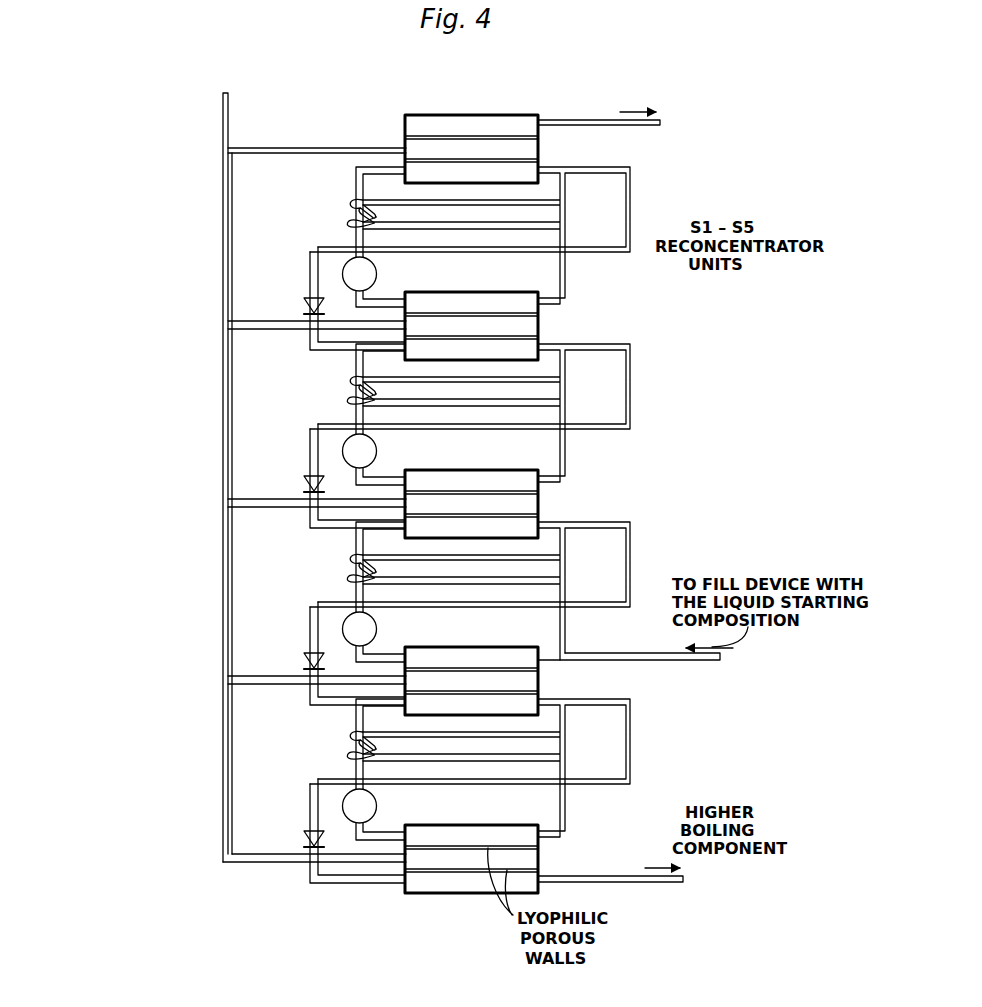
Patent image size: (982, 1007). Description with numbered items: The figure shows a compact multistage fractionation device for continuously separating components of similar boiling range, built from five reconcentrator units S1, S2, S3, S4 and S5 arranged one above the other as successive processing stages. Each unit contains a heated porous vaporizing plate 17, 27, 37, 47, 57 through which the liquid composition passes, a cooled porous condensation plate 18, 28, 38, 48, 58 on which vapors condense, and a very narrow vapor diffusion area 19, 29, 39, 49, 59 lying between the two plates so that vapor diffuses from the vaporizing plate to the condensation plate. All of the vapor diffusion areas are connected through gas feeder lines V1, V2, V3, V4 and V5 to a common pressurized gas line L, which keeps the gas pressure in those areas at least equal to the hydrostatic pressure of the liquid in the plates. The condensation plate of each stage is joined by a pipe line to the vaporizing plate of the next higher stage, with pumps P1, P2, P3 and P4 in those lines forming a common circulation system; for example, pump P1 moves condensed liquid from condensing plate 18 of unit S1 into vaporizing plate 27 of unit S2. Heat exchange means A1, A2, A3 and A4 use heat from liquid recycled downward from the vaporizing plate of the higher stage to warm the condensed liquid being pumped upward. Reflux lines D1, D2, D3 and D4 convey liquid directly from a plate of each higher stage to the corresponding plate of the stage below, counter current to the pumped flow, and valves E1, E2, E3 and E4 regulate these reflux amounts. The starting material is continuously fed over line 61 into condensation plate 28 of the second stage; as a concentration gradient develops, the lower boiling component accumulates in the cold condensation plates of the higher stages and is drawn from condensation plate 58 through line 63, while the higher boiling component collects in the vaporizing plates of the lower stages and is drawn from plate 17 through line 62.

The common pressurized gas line L is at (232, 474).
The gas feeder line V1 is at (262, 853).
The gas feeder line V2 is at (254, 674).
The gas feeder line V3 is at (257, 497).
The gas feeder line V4 is at (250, 318).
The gas feeder line V5 is at (296, 143).
The heat exchange means A1 is at (348, 745).
The heat exchange means A2 is at (349, 567).
The heat exchange means A3 is at (348, 388).
The heat exchange means A4 is at (347, 212).
The pumping means P1 is at (377, 808).
The pumping means P2 is at (377, 627).
The pumping means P3 is at (377, 450).
The pumping means P4 is at (377, 272).
The valve means E1 is at (326, 838).
The valve means E2 is at (326, 660).
The valve means E3 is at (326, 483).
The valve means E4 is at (326, 305).
The reconcentrator unit S1 is at (455, 895).
The reconcentrator unit S2 is at (457, 647).
The reconcentrator unit S3 is at (452, 469).
The reconcentrator unit S4 is at (455, 291).
The reconcentrator unit S5 is at (530, 114).
The reflux line D1 is at (631, 756).
The reflux line D2 is at (631, 571).
The reflux line D3 is at (631, 395).
The reflux line D4 is at (630, 210).
The porous vaporizing plate 17 is at (498, 868).
The porous condensation plate 18 is at (472, 838).
The vapor diffusion area 19 is at (503, 854).
The porous vaporizing plate 27 is at (527, 700).
The porous condensation plate 28 is at (520, 660).
The vapor diffusion area 29 is at (532, 680).
The porous vaporizing plate 37 is at (527, 522).
The porous condensation plate 38 is at (517, 476).
The vapor diffusion area 39 is at (530, 501).
The porous vaporizing plate 47 is at (525, 347).
The porous condensation plate 48 is at (518, 301).
The vapor diffusion area 49 is at (530, 323).
The porous vaporizing plate 57 is at (522, 170).
The porous condensation plate 58 is at (456, 126).
The vapor diffusion area 59 is at (485, 148).
The feed line 61 is at (643, 649).
The higher boiling component outlet line 62 is at (730, 855).
The lower boiling component outlet line 63 is at (612, 123).